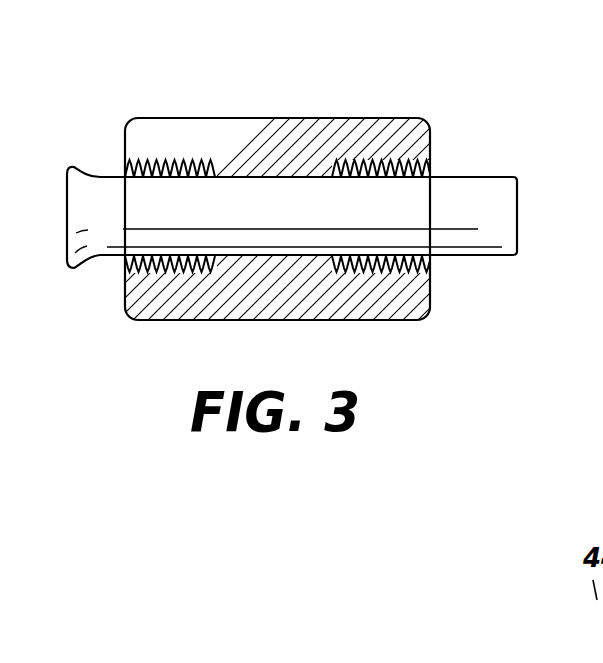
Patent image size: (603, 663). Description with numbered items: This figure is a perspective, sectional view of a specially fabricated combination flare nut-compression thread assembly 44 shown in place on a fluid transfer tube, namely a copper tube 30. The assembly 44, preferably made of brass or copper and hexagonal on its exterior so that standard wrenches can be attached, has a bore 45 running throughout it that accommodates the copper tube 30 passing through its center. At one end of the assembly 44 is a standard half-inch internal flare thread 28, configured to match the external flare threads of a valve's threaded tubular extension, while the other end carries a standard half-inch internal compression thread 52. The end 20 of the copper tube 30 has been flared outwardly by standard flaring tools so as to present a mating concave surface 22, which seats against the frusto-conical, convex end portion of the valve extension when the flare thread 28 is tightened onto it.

The end of the copper tube 20 is at (291, 200).
The mating concave surface 22 is at (66, 228).
The internal flare thread 28 is at (179, 157).
The copper tube 30 is at (496, 166).
The combination flare nut-compression thread assembly 44 is at (389, 328).
The bore 45 is at (303, 165).
The internal compression thread 52 is at (401, 162).